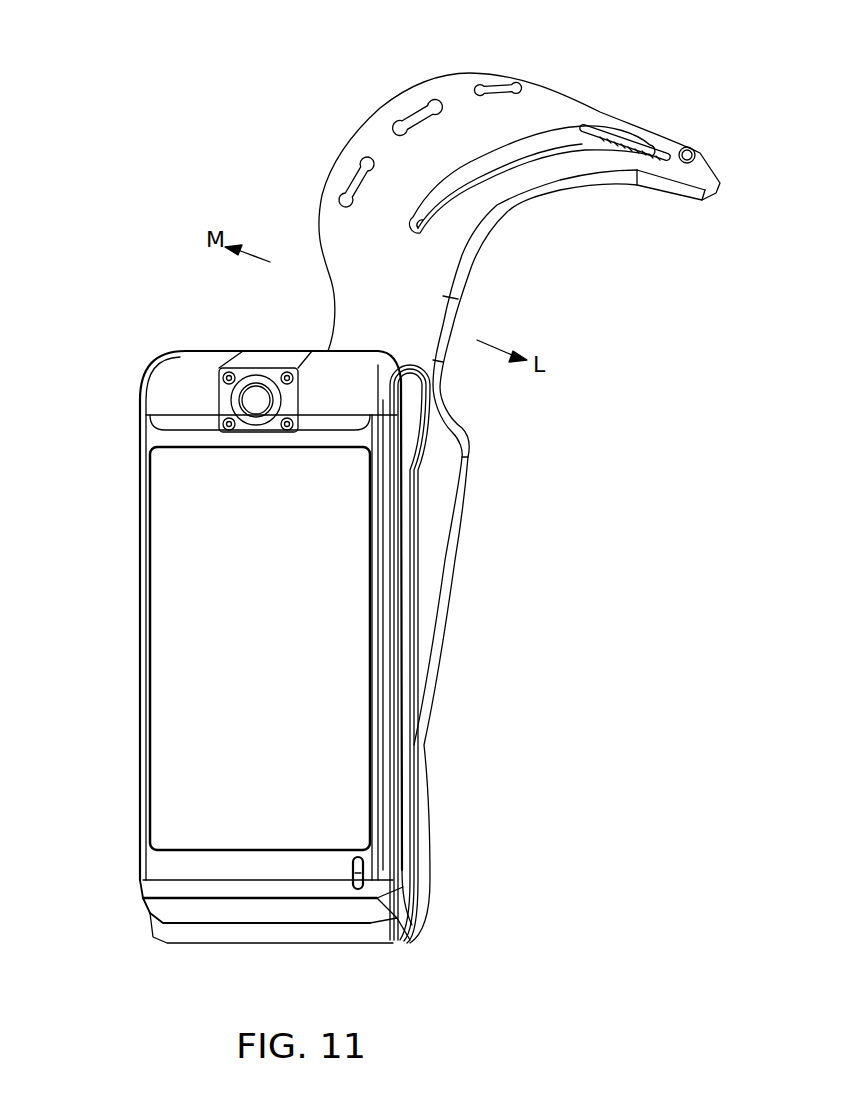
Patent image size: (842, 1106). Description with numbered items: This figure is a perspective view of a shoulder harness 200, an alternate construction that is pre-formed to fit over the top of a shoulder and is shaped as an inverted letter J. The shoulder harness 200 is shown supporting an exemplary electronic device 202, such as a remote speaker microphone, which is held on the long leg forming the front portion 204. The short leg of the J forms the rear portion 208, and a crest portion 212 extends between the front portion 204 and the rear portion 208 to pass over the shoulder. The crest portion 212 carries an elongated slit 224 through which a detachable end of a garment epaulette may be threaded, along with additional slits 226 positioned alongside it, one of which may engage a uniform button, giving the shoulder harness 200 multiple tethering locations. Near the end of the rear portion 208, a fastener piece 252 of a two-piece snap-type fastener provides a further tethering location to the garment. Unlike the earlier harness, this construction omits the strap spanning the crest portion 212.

The shoulder harness 200 is at (122, 165).
The electronic device 202 is at (173, 720).
The front portion 204 is at (427, 578).
The rear portion 208 is at (690, 201).
The crest portion 212 is at (492, 202).
The slit 224 is at (581, 132).
The additional slits 226 is at (357, 173).
The fastener piece 252 is at (687, 147).